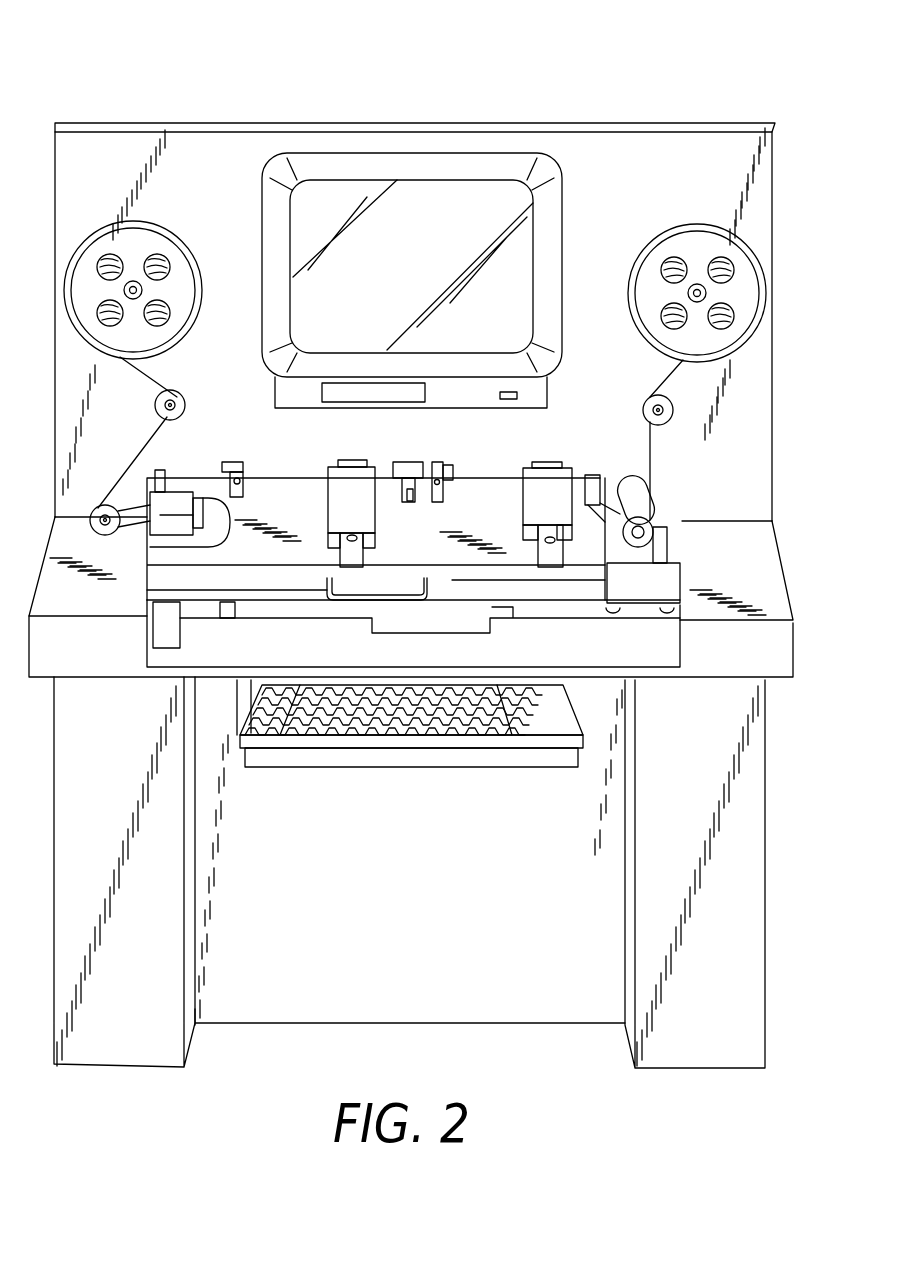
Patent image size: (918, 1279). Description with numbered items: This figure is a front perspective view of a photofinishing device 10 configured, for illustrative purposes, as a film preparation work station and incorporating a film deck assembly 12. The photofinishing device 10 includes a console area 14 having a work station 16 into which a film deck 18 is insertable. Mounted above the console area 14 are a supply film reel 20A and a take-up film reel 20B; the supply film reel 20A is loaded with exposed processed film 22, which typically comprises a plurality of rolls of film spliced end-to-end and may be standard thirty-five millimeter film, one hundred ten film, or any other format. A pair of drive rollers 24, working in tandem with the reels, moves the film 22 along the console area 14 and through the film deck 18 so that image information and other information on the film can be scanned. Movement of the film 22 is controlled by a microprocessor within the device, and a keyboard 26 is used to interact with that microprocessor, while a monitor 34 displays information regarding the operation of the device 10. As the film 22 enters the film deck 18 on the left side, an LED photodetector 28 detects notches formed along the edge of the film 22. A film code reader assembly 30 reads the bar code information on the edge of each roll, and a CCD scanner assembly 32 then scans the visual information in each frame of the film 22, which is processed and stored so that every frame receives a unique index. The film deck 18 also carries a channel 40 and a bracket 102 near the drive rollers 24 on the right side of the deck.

The photofinishing device 10 is at (570, 93).
The film deck assembly 12 is at (560, 432).
The console area 14 is at (758, 562).
The work station 16 is at (538, 659).
The film deck 18 is at (277, 492).
The supply film reel 20A is at (148, 222).
The take-up film reel 20B is at (688, 226).
The film 22 is at (150, 378).
The drive rollers 24 is at (652, 535).
The keyboard 26 is at (447, 738).
The LED photodetector 28 is at (172, 492).
The film code reader assembly 30 is at (353, 477).
The CCD scanner assembly 32 is at (550, 477).
The monitor 34 is at (423, 281).
The guide channel 40 is at (343, 602).
The roller bracket 102 is at (588, 475).